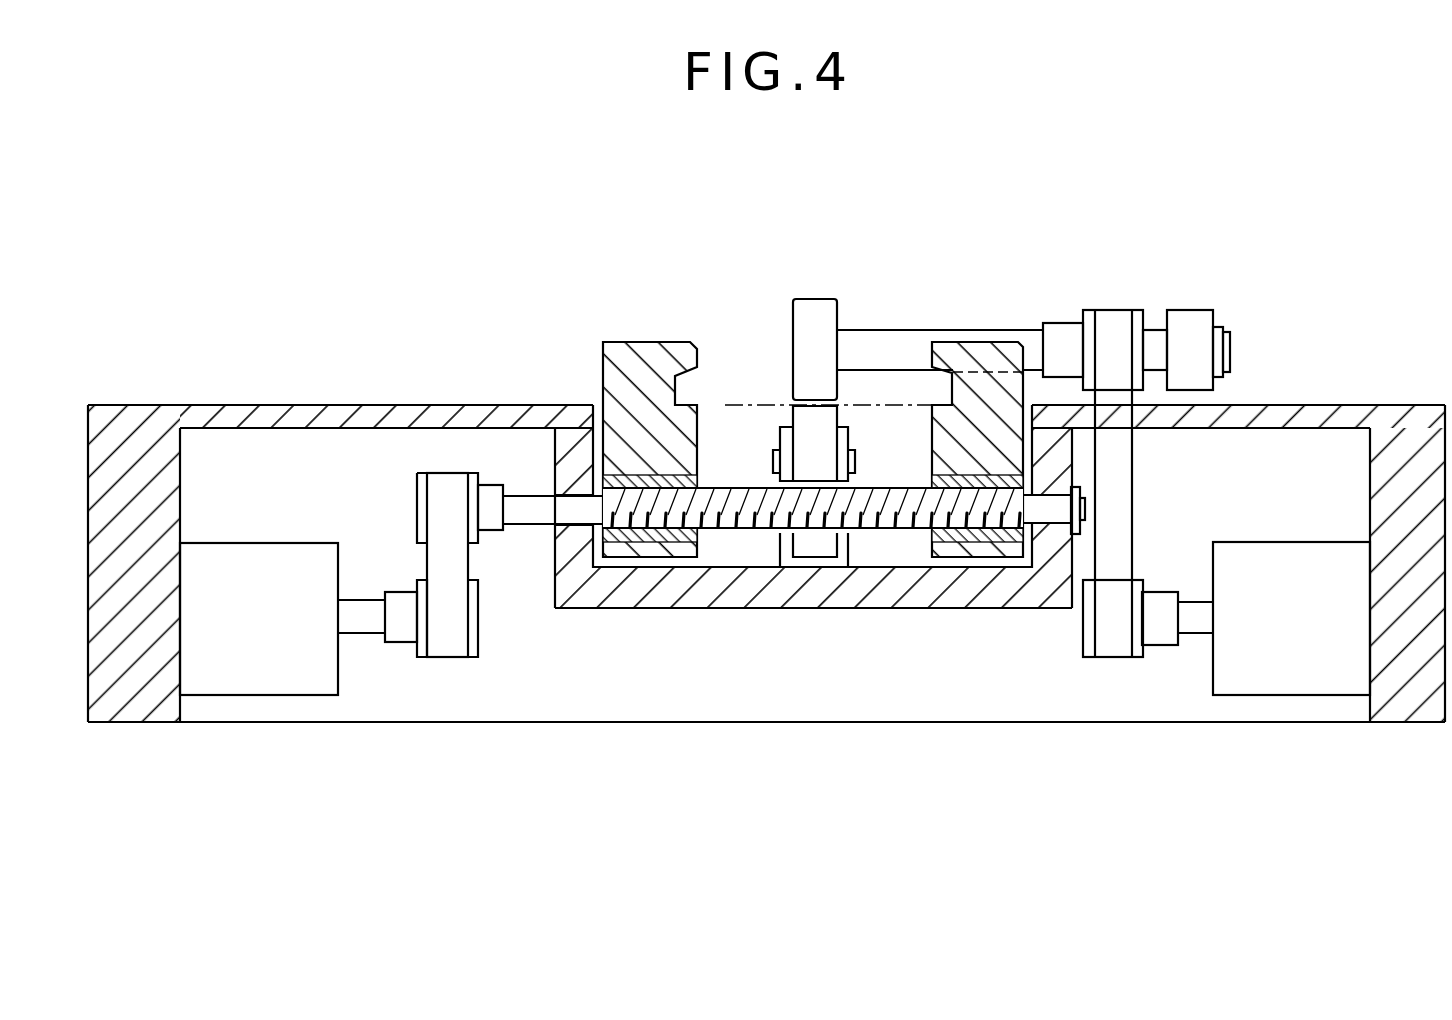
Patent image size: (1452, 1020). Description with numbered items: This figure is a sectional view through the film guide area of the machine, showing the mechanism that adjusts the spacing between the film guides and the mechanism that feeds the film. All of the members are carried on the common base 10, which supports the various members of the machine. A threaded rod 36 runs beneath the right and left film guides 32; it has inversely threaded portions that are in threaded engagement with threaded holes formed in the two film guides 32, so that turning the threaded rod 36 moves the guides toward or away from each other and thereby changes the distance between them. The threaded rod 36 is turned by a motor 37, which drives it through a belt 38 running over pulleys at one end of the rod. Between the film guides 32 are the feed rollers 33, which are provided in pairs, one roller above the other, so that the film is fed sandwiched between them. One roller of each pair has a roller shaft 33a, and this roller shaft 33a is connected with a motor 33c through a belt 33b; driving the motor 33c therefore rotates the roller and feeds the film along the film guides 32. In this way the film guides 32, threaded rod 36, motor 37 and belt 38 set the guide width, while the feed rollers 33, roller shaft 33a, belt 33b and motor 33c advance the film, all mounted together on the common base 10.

The common base 10 is at (1328, 405).
The film guides 32 is at (635, 358).
The feed rollers 33 is at (827, 423).
The roller shaft 33a is at (897, 345).
The belt 33b is at (1113, 638).
The motor 33c is at (1293, 678).
The threaded rods 36 is at (530, 515).
The motor 37 is at (270, 678).
The belt 38 is at (445, 638).